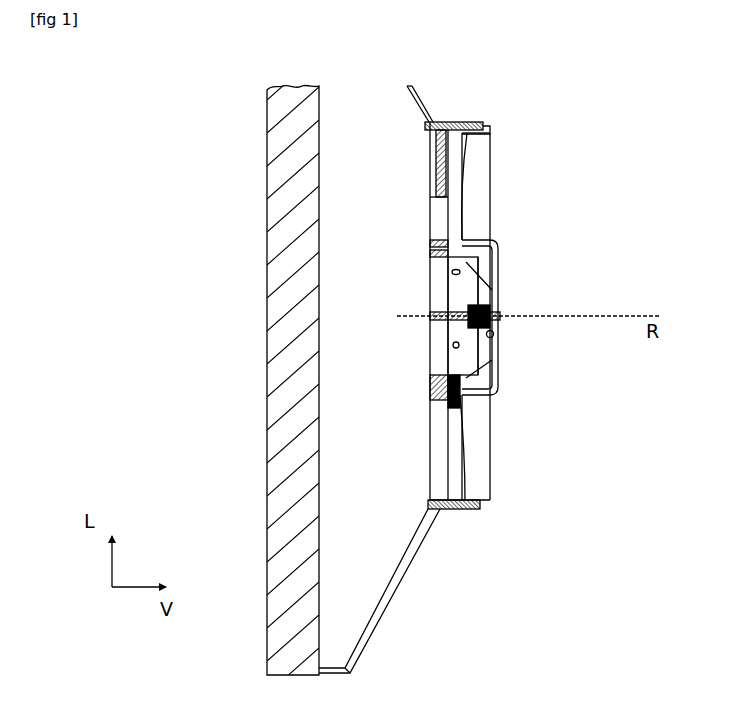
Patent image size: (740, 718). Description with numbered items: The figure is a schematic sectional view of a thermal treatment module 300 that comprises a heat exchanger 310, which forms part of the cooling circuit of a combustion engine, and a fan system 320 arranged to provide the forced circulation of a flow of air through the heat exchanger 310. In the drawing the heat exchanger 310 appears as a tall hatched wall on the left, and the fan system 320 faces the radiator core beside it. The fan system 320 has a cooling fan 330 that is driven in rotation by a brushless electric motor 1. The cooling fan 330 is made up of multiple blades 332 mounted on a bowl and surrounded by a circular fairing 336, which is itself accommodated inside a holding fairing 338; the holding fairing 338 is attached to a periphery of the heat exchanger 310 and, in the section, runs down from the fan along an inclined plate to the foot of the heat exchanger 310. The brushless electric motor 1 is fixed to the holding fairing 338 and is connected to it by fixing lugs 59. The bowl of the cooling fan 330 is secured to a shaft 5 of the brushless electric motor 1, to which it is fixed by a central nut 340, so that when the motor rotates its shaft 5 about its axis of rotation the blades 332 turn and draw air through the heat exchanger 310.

The thermal treatment module 300 is at (133, 246).
The heat exchanger 310 is at (302, 514).
The cooling fan 330 is at (494, 211).
The blades 332 is at (485, 168).
The circular fairing 336 is at (490, 127).
The holding fairing 338 is at (397, 578).
The fixing lugs 59 is at (435, 185).
The fan system 320 is at (513, 347).
The brushless electric motor 1 is at (446, 281).
The shaft 5 is at (440, 313).
The central nut 340 is at (500, 312).